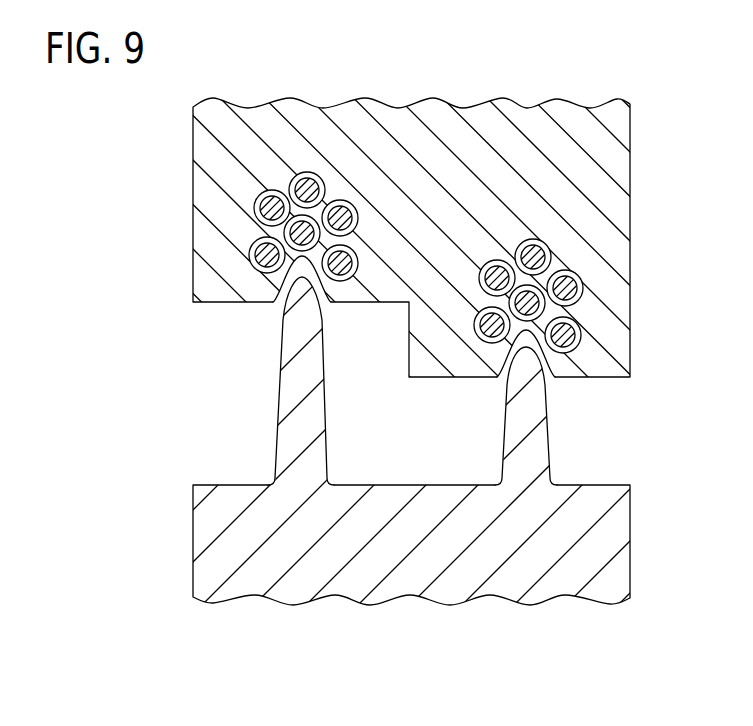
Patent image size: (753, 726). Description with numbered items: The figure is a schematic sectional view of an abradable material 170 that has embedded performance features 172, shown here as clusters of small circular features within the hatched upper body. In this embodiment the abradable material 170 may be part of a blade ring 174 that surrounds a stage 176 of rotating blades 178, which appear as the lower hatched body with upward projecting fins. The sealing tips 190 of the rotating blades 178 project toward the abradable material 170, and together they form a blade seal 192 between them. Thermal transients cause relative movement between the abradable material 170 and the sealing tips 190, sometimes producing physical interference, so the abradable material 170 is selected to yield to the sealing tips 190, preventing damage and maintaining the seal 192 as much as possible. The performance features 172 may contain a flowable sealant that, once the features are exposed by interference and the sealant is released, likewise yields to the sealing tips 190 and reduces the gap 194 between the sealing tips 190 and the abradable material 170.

The abradable material 170 is at (376, 220).
The blade ring 174 is at (435, 118).
The performance features 172 is at (340, 181).
The stage 176 is at (376, 434).
The rotating blades 178 is at (376, 425).
The sealing tips 190 is at (300, 323).
The blade seal 192 is at (274, 322).
The gap 194 is at (318, 300).